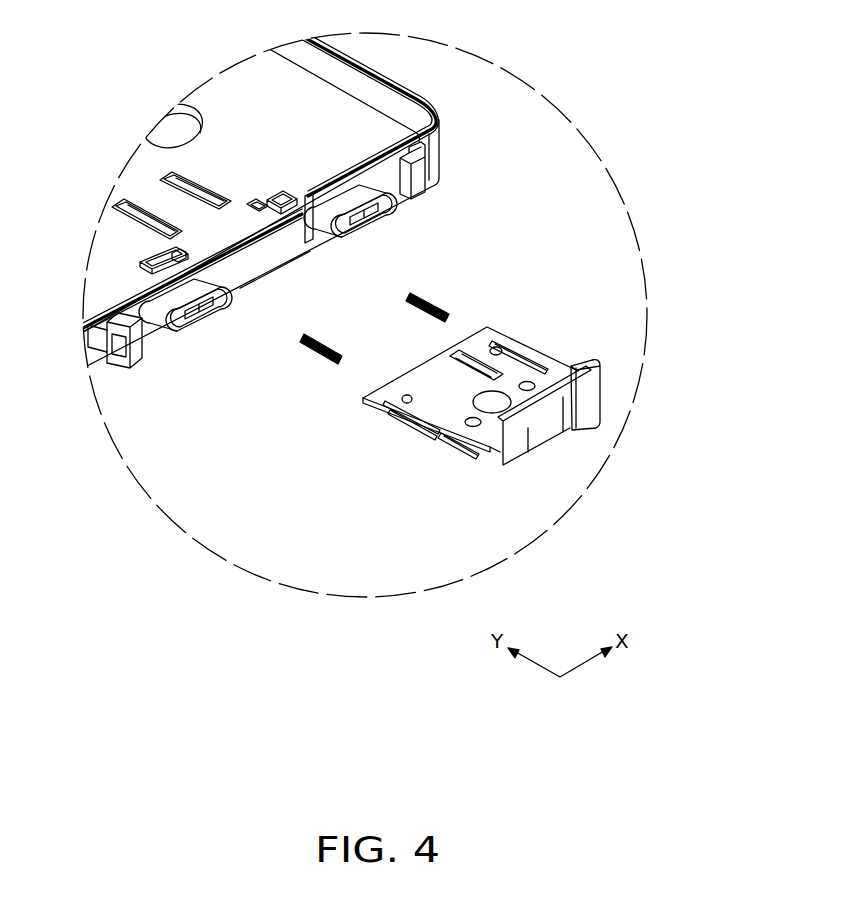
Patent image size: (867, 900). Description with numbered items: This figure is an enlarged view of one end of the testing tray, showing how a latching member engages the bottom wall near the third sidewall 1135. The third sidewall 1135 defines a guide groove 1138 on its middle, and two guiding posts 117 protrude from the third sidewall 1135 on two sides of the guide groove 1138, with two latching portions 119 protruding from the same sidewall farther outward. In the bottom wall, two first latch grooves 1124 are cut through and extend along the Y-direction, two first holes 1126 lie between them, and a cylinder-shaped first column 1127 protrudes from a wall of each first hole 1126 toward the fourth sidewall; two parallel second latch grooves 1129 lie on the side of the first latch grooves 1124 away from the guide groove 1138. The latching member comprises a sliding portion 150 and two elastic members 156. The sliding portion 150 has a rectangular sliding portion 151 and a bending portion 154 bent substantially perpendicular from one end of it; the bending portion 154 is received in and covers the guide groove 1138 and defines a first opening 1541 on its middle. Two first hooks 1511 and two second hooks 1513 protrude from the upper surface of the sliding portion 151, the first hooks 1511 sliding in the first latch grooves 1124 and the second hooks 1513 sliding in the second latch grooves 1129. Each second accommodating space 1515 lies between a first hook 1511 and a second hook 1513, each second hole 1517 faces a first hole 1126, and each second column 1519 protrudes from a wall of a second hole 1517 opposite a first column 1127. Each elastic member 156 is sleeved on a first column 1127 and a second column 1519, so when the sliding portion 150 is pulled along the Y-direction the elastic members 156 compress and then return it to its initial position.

The guiding post 117 is at (163, 303).
The latching portion 119 is at (110, 318).
The first latch groove 1124 is at (287, 192).
The first hole 1126 is at (253, 213).
The first column 1127 is at (263, 285).
The second latch groove 1129 is at (133, 201).
The third sidewall 1135 is at (146, 342).
The guide groove 1138 is at (253, 265).
The sliding portion 150 is at (526, 390).
The sliding portion 151 is at (557, 370).
The first hook 1511 is at (465, 462).
The second hook 1513 is at (445, 372).
The second accommodating space 1515 is at (527, 368).
The second hole 1517 is at (500, 347).
The second column 1519 is at (397, 418).
The bending portion 154 is at (590, 392).
The first opening 1541 is at (548, 422).
The elastic member 156 is at (426, 302).